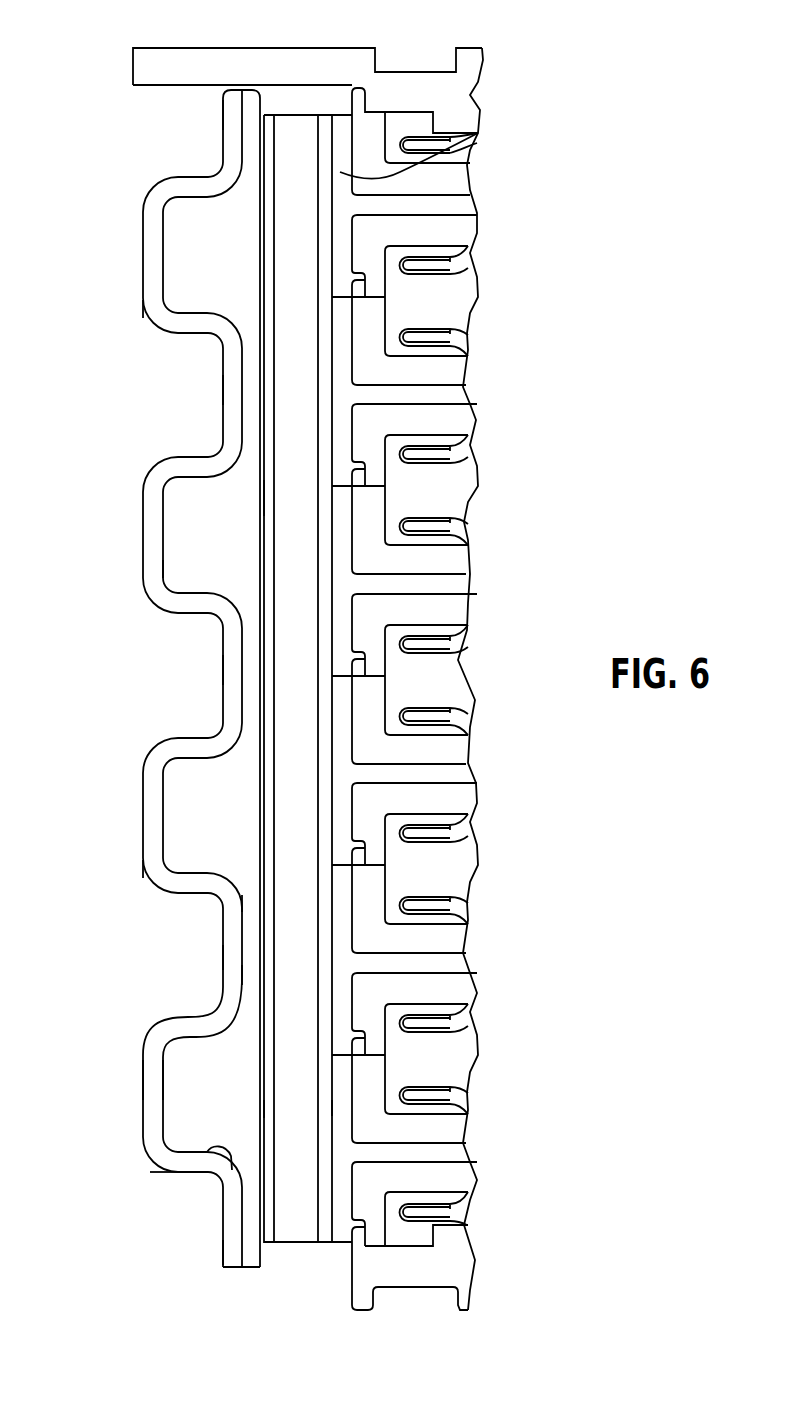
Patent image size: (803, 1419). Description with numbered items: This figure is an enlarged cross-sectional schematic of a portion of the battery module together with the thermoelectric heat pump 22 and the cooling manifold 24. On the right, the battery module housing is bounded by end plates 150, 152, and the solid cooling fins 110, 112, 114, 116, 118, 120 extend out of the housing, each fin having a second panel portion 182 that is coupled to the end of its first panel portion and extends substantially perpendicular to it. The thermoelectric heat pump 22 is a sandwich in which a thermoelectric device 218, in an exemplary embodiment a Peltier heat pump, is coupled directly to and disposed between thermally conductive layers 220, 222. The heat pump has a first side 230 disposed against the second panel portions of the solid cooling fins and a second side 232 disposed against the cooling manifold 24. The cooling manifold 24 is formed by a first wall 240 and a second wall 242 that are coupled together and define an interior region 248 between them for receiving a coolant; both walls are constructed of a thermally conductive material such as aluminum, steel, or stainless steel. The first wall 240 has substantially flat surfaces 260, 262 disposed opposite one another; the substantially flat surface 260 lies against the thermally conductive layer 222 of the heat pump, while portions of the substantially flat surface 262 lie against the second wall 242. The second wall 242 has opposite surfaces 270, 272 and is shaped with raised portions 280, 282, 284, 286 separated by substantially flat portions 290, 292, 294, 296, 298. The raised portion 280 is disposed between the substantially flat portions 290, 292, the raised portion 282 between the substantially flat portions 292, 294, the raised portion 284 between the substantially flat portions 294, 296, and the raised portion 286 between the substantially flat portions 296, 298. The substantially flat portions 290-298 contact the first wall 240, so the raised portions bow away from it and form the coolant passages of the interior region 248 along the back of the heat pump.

The thermoelectric heat pump 22 is at (278, 498).
The cooling manifold 24 is at (146, 889).
The solid cooling fin 110 is at (460, 204).
The solid cooling fin 112 is at (452, 392).
The solid cooling fin 114 is at (460, 586).
The solid cooling fin 116 is at (460, 776).
The solid cooling fin 118 is at (460, 966).
The solid cooling fin 120 is at (455, 1156).
The end plate 150 is at (417, 83).
The end plate 152 is at (417, 1267).
The second panel portion 182 is at (473, 141).
The thermoelectric device 218 is at (297, 1247).
The thermally conductive layer 220 is at (327, 1247).
The thermally conductive layer 222 is at (266, 1247).
The first side 230 is at (330, 1108).
The second side 232 is at (265, 1110).
The first wall 240 is at (242, 903).
The second wall 242 is at (220, 975).
The interior region 248 is at (207, 1060).
The substantially flat surface 260 is at (262, 597).
The substantially flat surface 262 is at (240, 608).
The surface 270 is at (213, 1185).
The surface 272 is at (157, 1165).
The raised portion 280 is at (143, 1090).
The raised portion 282 is at (143, 818).
The raised portion 284 is at (143, 538).
The raised portion 286 is at (143, 258).
The substantially flat portion 290 is at (232, 1255).
The substantially flat portion 292 is at (232, 960).
The substantially flat portion 294 is at (232, 672).
The substantially flat portion 296 is at (232, 392).
The substantially flat portion 298 is at (232, 120).